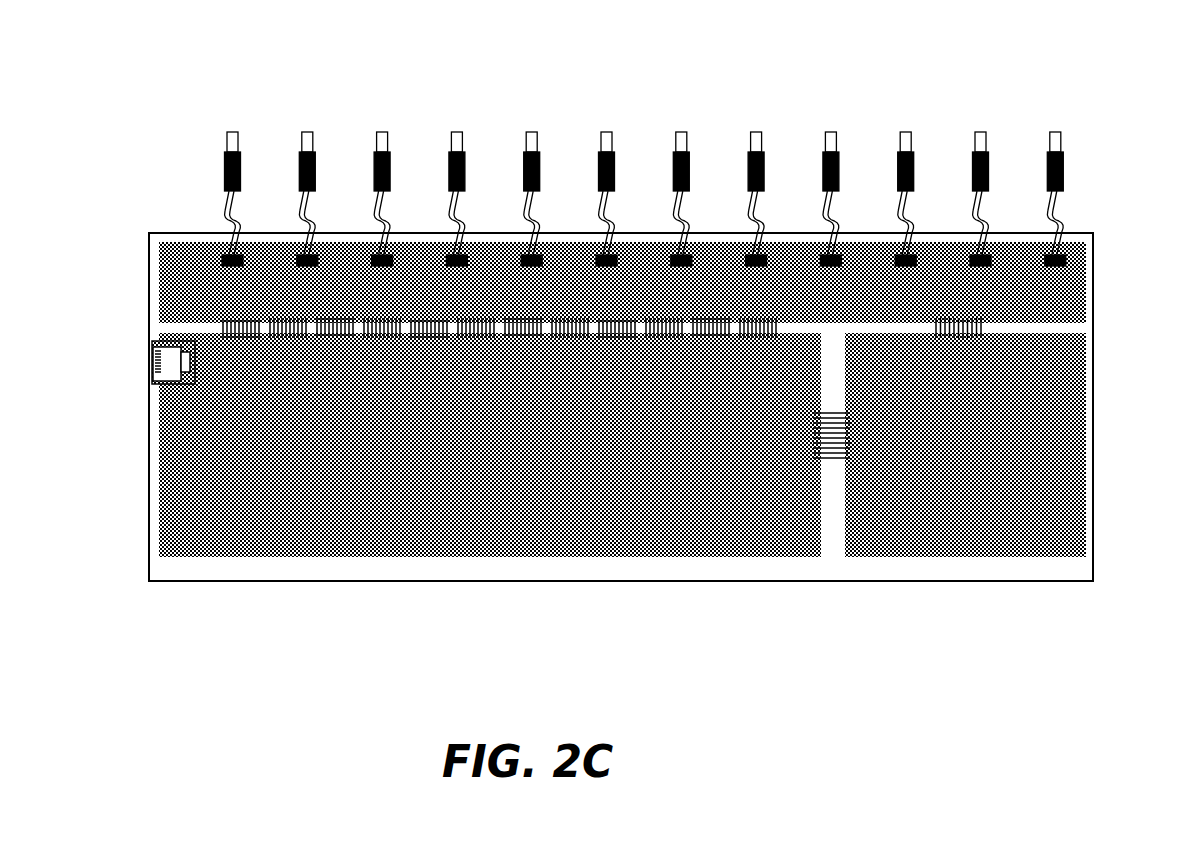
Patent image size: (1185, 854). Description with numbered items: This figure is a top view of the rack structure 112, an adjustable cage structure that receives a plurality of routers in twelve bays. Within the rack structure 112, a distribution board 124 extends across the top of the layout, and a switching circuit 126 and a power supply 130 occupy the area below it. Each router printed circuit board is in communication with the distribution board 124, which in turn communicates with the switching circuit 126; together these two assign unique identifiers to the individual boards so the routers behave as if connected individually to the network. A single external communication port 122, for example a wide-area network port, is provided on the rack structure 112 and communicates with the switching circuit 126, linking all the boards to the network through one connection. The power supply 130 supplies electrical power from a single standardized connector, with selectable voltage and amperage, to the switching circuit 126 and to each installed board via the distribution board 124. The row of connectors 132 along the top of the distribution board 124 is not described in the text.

The rack structure 112 is at (139, 88).
The external communication port 122 is at (151, 353).
The distribution board 124 is at (1075, 300).
The switching circuit 126 is at (458, 507).
The power supply 130 is at (1068, 537).
The output connectors 132 is at (305, 145).